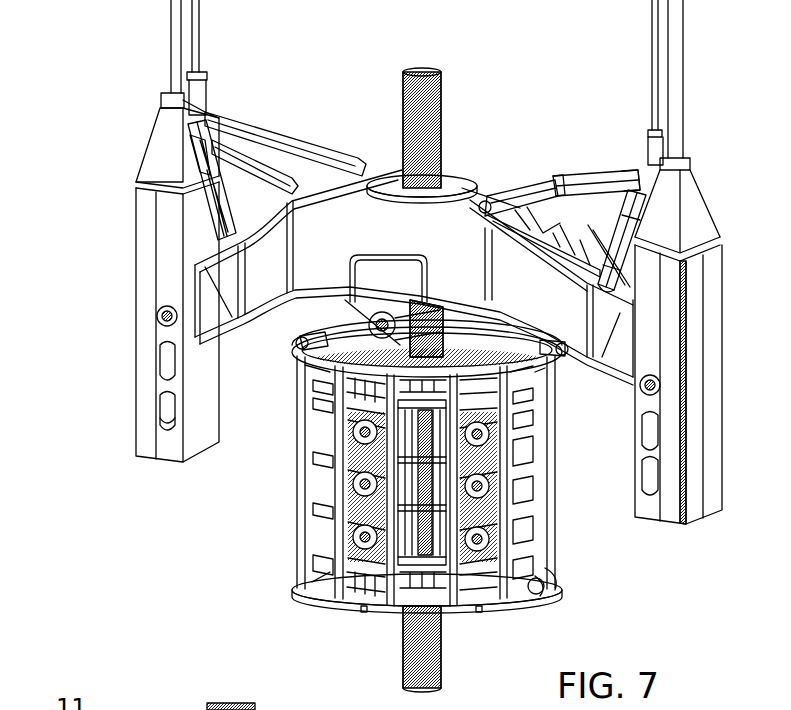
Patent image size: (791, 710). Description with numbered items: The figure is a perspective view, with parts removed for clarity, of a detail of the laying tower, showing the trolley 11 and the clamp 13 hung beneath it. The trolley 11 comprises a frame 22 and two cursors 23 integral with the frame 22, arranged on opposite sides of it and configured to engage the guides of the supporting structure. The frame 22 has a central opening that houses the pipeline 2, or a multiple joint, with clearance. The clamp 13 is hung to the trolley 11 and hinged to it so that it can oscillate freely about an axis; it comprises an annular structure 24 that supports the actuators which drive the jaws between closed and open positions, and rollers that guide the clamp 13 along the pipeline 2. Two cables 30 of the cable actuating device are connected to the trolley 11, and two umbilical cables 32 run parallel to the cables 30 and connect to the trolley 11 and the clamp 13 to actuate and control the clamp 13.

The pipeline 2 is at (441, 678).
The trolley 11 is at (496, 147).
The clamp 13 is at (338, 627).
The frame 22 is at (392, 180).
The cursors 23 is at (156, 316).
The annular structure 24 is at (560, 590).
The cables 30 is at (171, 22).
The umbilical cables 32 is at (200, 50).